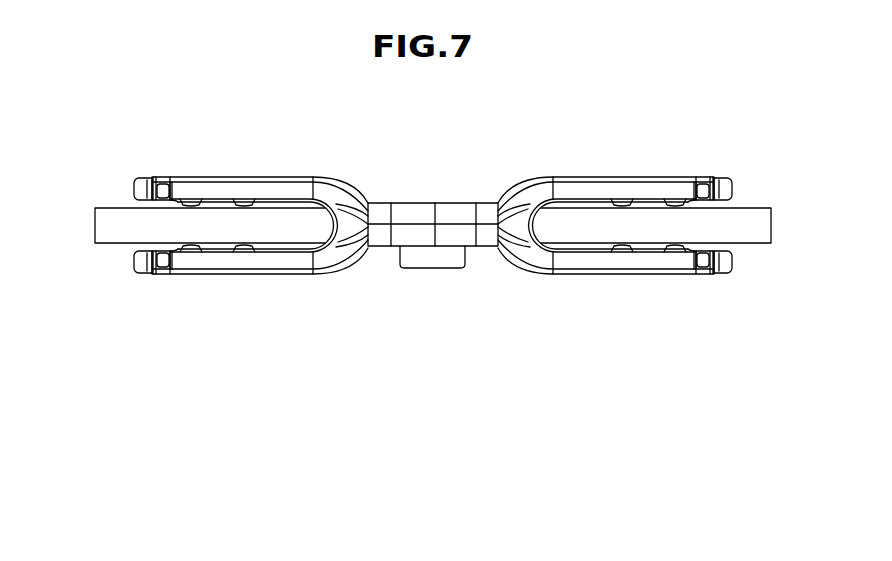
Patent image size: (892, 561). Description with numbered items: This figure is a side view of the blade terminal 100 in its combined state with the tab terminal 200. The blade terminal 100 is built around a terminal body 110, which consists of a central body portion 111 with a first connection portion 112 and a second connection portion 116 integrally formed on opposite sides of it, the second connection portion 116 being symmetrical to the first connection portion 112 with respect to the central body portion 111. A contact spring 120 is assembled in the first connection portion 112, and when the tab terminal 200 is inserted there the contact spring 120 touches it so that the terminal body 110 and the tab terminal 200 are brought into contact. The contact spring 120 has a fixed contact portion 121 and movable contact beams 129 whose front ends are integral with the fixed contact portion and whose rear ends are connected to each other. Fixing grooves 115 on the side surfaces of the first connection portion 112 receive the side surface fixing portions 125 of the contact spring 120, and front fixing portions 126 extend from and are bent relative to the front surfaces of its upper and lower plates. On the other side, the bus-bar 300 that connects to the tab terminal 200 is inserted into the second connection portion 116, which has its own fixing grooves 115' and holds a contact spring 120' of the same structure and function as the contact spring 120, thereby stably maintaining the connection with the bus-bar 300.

The blade terminal 100 is at (489, 190).
The terminal body 110 is at (333, 172).
The central body portion 111 is at (424, 214).
The first connection portion 112 is at (241, 186).
The fixing grooves 115 is at (191, 186).
The fixing grooves 115' is at (723, 188).
The second connection portion 116 is at (598, 187).
The contact spring 120 is at (262, 231).
The contact spring 120' is at (624, 229).
The fixed contact portion 121 is at (341, 270).
The side surface fixing portions 125 is at (164, 188).
The front fixing portions 126 is at (133, 185).
The contact beams 129 is at (246, 250).
The tab terminal 200 is at (113, 218).
The bus-bar 300 is at (745, 215).